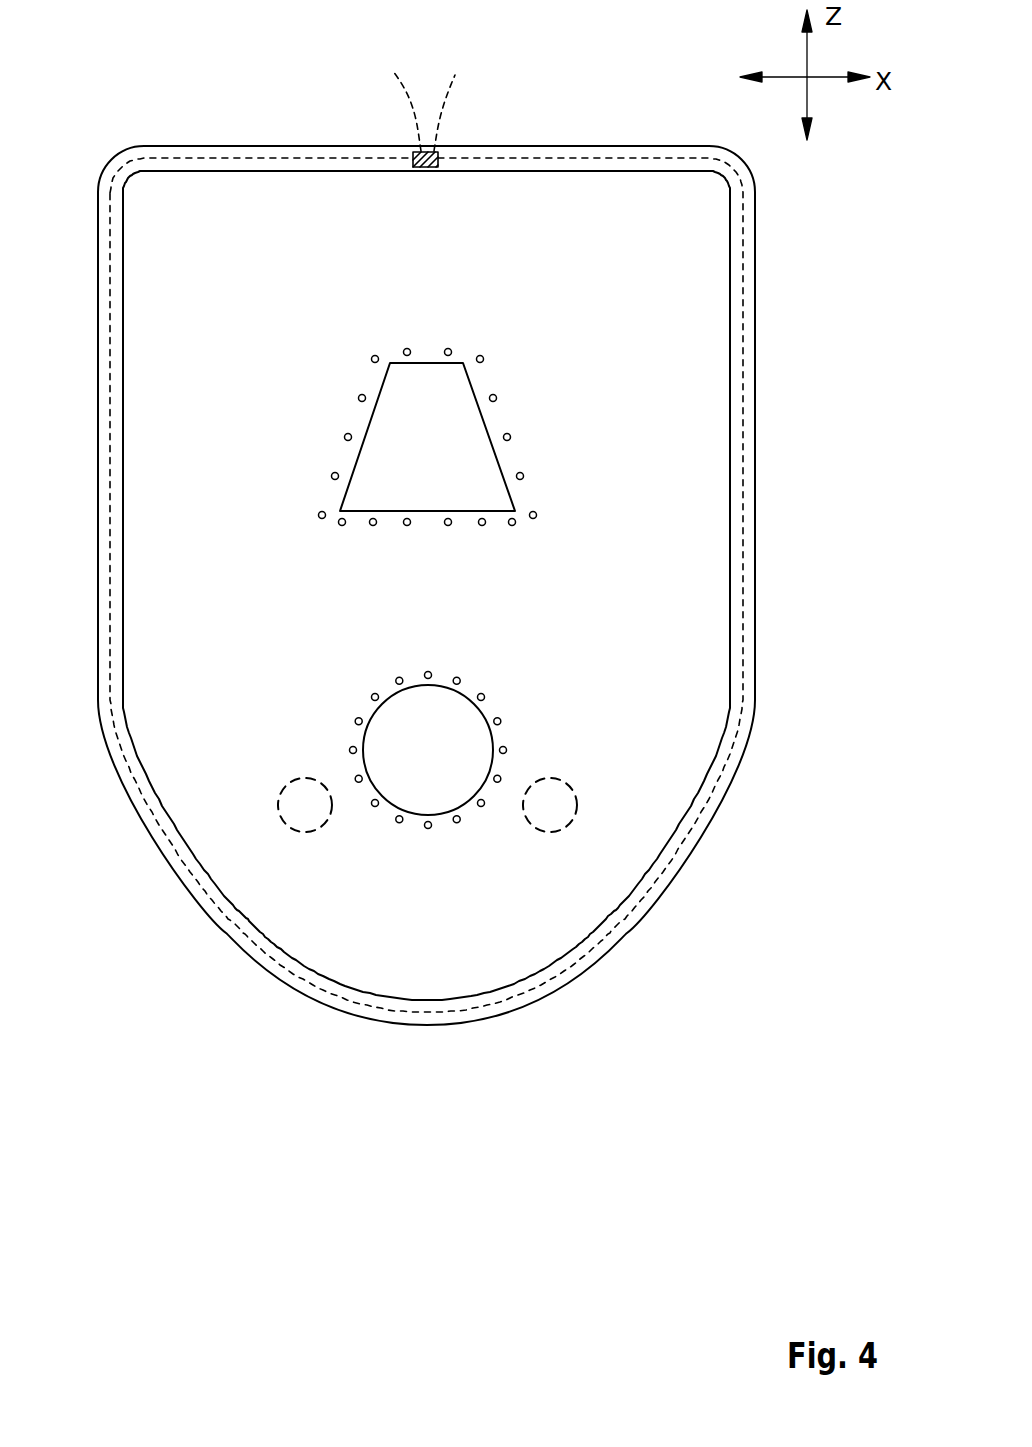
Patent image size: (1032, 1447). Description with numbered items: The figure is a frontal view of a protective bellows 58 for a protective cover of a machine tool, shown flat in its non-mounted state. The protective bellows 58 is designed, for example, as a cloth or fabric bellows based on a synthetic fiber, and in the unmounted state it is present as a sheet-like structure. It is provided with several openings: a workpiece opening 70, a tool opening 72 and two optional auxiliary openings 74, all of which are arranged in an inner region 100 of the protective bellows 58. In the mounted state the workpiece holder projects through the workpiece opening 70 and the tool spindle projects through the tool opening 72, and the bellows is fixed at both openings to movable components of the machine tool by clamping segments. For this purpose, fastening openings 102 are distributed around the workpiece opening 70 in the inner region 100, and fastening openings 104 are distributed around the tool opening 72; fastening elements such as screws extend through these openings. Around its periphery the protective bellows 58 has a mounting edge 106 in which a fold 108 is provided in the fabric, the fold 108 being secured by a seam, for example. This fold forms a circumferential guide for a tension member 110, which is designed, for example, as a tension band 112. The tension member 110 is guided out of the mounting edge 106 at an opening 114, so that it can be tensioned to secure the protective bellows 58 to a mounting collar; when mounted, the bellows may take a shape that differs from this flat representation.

The protective bellows 58 is at (655, 978).
The inner region 100 is at (573, 580).
The workpiece opening 70 is at (493, 740).
The tool opening 72 is at (487, 420).
The auxiliary openings 74 is at (278, 815).
The fastening openings 102 is at (482, 698).
The fastening openings 104 is at (484, 357).
The mounting edge 106 is at (226, 933).
The fold 108 is at (308, 970).
The tension member 110 is at (415, 92).
The tension band 112 is at (570, 160).
The opening 114 is at (440, 150).